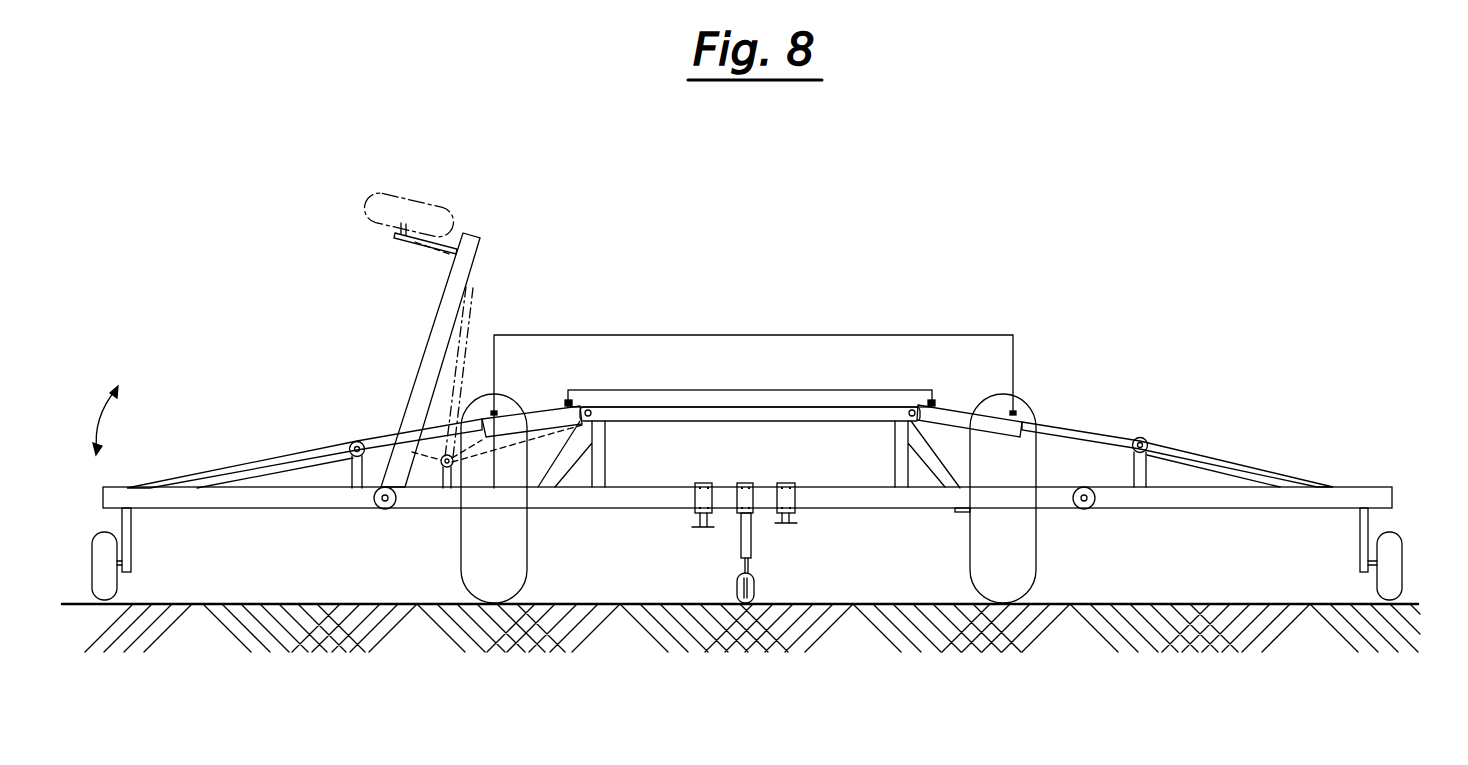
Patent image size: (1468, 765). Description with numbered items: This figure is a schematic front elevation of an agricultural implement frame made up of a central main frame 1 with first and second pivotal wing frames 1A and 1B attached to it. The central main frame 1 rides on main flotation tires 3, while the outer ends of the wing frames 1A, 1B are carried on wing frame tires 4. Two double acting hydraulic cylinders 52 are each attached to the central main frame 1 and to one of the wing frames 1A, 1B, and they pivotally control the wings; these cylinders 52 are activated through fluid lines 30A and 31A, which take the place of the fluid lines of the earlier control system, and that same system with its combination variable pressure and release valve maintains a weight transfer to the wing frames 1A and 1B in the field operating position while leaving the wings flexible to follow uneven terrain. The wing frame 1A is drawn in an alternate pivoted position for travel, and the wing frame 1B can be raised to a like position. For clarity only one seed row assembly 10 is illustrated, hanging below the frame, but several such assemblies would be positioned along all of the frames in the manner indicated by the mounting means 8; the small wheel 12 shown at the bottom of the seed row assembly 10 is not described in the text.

The central main frame 1 is at (880, 502).
The wing frame 1A is at (265, 502).
The wing frame 1B is at (1223, 500).
The main flotation tires 3 is at (528, 578).
The wing frame tires 4 is at (116, 583).
The mounting means 8 is at (746, 483).
The seed row assembly 10 is at (730, 533).
The depth wheel 12 is at (752, 587).
The fluid line 30A is at (880, 352).
The fluid line 31A is at (962, 282).
The double acting hydraulic cylinders 52 is at (546, 410).